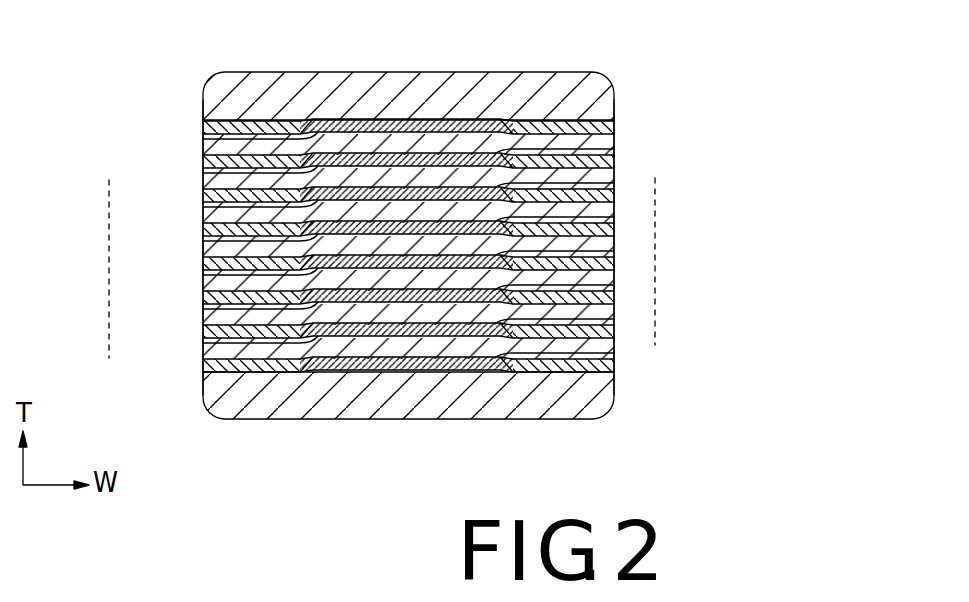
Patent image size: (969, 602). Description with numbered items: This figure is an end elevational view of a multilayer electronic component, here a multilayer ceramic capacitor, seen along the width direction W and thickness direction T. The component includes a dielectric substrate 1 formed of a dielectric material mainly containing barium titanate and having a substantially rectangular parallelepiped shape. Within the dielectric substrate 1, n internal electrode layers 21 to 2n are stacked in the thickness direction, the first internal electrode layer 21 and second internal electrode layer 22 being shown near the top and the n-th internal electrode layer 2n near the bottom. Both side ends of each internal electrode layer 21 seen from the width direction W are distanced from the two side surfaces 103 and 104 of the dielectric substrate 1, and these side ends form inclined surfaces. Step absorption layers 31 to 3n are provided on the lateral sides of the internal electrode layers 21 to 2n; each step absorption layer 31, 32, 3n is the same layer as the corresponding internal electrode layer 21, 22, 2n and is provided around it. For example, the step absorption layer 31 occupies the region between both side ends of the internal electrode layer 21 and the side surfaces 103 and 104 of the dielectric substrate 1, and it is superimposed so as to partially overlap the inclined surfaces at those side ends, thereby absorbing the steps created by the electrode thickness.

The dielectric substrate 1 is at (412, 82).
The step absorption layer 31 is at (204, 118).
The step absorption layer 32 is at (203, 163).
The internal electrode layer 21 is at (203, 141).
The internal electrode layer 22 is at (203, 186).
The internal electrode layer 2n is at (203, 350).
The step absorption layer 3n is at (203, 370).
The side surface 103 is at (203, 389).
The side surface 104 is at (614, 384).